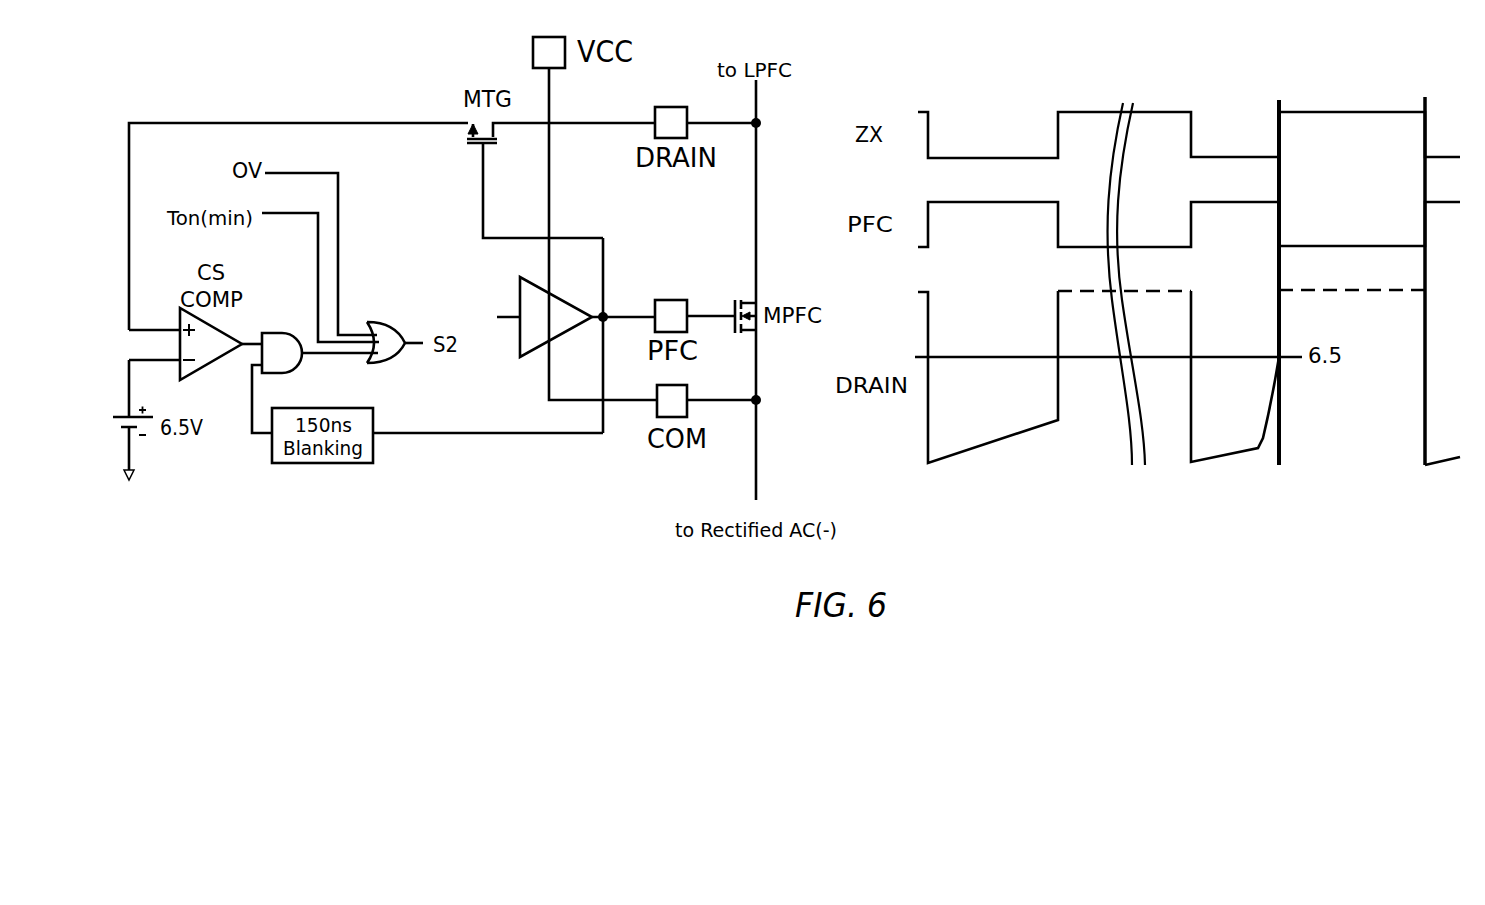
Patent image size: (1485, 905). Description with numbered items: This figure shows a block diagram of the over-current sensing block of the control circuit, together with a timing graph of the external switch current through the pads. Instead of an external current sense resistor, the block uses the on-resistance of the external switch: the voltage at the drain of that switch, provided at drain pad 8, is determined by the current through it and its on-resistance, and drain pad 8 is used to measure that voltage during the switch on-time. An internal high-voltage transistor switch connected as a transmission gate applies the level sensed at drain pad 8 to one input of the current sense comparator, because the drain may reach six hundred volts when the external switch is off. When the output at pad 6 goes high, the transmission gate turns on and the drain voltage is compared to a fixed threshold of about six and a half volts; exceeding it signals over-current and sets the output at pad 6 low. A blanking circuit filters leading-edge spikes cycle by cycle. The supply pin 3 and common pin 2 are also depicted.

The VCC pin 3 is at (595, 218).
The DRAIN pad 8 is at (705, 122).
The PFC pad 6 is at (695, 316).
The COM pin 2 is at (706, 401).